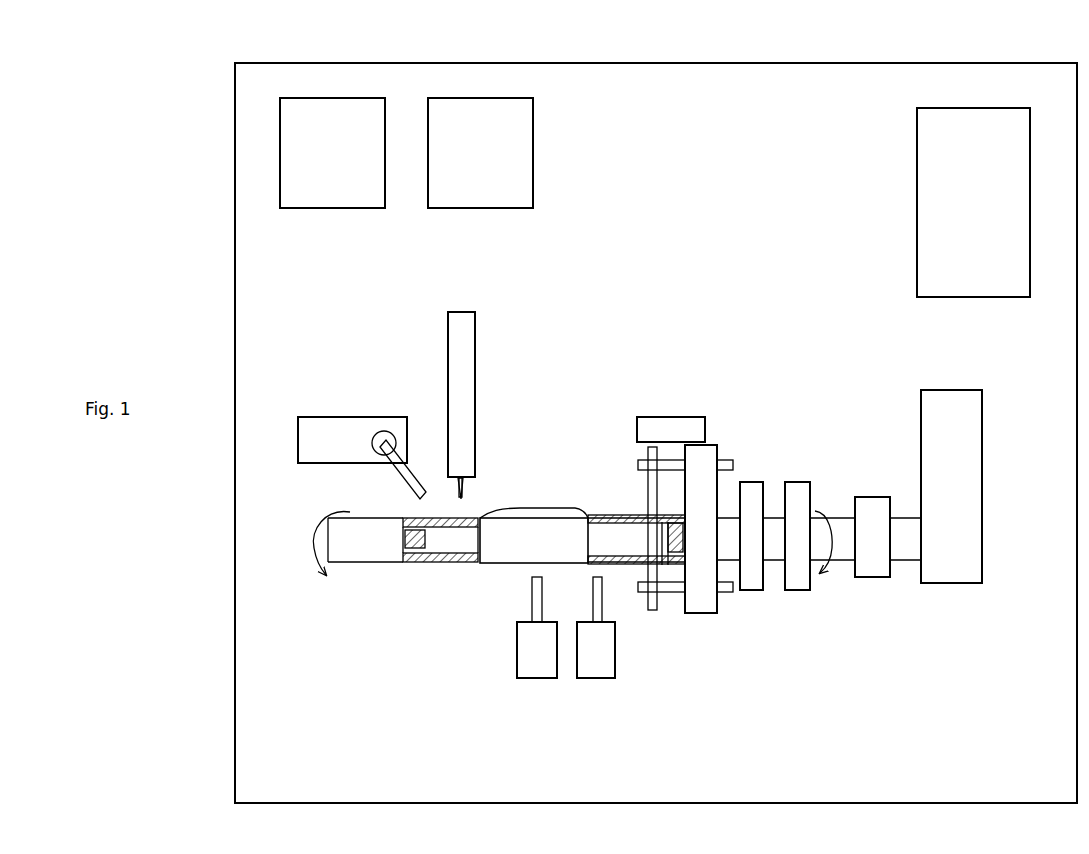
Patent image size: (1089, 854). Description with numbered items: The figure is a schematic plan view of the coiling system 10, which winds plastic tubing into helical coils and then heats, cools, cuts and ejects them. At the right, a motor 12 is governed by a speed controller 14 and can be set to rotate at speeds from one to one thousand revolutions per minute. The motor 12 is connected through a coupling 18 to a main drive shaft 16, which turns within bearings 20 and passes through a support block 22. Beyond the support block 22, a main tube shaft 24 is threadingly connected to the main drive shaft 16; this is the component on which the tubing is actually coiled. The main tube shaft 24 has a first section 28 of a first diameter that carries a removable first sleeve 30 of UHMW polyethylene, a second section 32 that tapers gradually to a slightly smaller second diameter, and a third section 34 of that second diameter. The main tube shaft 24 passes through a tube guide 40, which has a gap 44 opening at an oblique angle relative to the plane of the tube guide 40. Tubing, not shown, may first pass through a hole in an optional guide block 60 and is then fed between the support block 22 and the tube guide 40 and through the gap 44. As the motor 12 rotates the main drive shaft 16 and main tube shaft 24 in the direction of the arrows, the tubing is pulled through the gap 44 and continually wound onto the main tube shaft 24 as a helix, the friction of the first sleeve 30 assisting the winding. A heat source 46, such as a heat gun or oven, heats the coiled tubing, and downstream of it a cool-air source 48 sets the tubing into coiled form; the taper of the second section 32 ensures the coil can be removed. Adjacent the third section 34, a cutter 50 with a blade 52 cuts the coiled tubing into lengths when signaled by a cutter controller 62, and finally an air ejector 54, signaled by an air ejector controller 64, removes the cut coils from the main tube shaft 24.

The coiling system 10 is at (212, 128).
The motor 12 is at (952, 461).
The speed controller 14 is at (974, 220).
The main drive shaft 16 is at (830, 553).
The coupling 18 is at (872, 508).
The bearings 20 is at (793, 590).
The support block 22 is at (707, 455).
The main tube shaft 24 is at (515, 560).
The first section 28 is at (602, 514).
The first sleeve 30 is at (627, 533).
The second section 32 is at (520, 508).
The third section 34 is at (440, 548).
The tube guide 40 is at (650, 493).
The gap 44 is at (656, 520).
The heat source 46 is at (590, 675).
The cool-air source 48 is at (533, 668).
The cutter 50 is at (466, 353).
The blade 52 is at (460, 498).
The air ejector 54 is at (340, 430).
The guide block 60 is at (690, 423).
The cutter controller 62 is at (484, 176).
The air ejector controller 64 is at (332, 176).